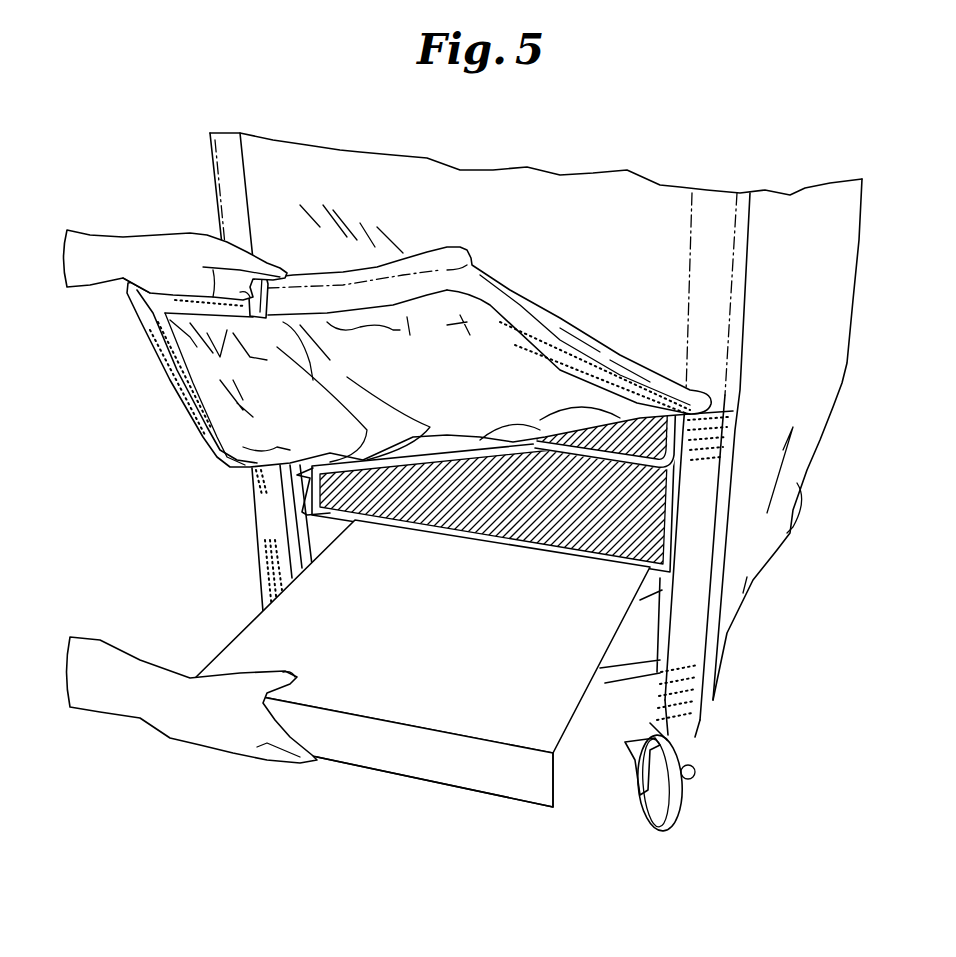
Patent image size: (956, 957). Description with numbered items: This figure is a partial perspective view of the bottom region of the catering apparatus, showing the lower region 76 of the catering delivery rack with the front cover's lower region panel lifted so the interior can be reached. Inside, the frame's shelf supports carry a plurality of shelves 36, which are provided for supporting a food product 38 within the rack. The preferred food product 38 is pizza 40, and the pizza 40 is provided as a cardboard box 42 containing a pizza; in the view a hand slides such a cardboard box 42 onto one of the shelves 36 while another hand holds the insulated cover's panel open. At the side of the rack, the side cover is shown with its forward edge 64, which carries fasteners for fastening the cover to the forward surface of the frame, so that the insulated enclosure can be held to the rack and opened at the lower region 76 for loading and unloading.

The lower region 76 is at (225, 500).
The forward edge 64 is at (260, 567).
The shelves 36 is at (673, 443).
The cardboard box 42 is at (420, 681).
The pizza 40 is at (397, 757).
The food product 38 is at (487, 773).